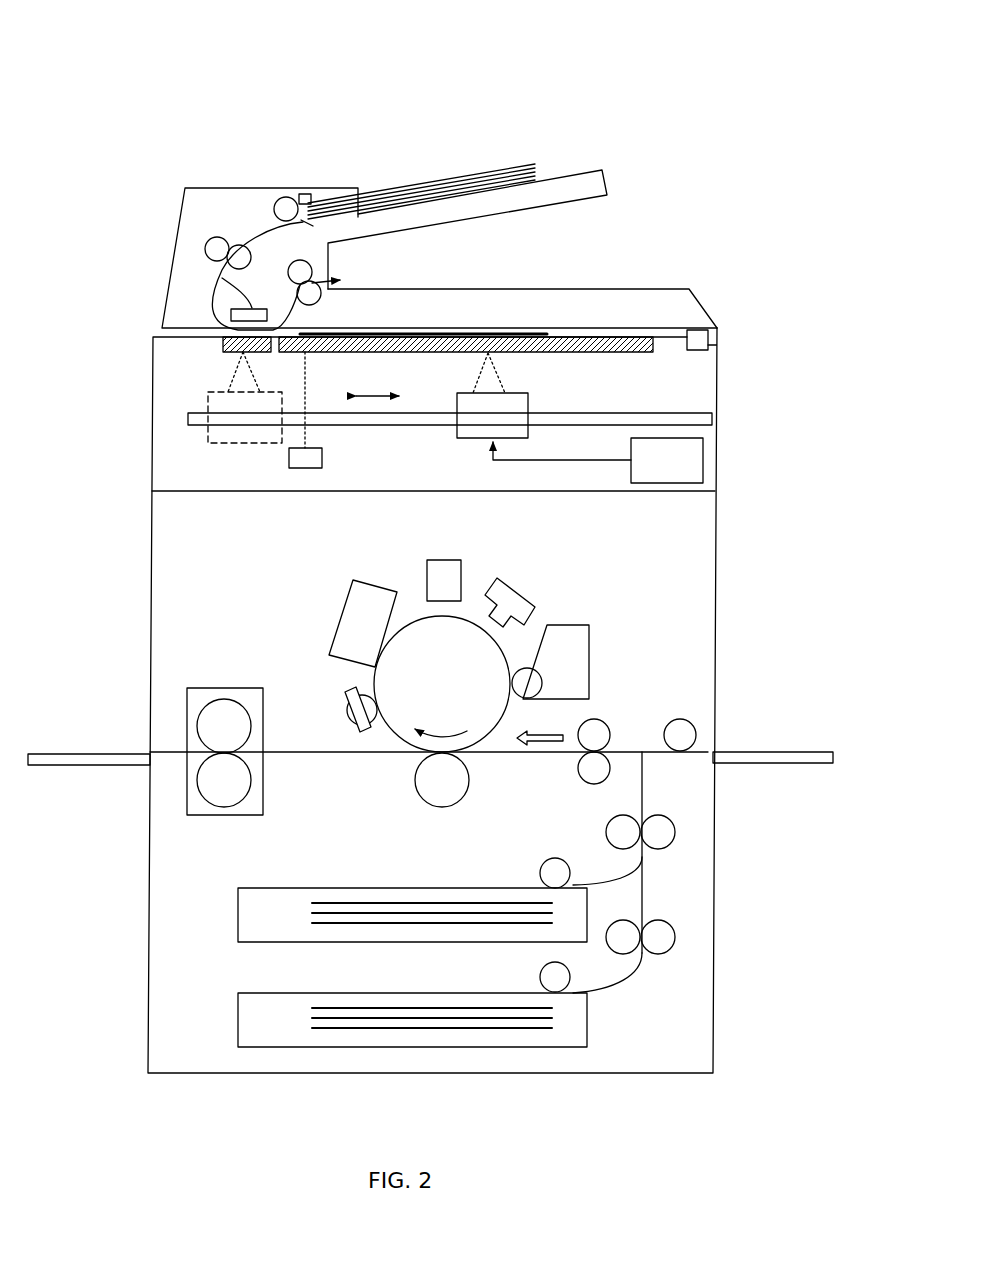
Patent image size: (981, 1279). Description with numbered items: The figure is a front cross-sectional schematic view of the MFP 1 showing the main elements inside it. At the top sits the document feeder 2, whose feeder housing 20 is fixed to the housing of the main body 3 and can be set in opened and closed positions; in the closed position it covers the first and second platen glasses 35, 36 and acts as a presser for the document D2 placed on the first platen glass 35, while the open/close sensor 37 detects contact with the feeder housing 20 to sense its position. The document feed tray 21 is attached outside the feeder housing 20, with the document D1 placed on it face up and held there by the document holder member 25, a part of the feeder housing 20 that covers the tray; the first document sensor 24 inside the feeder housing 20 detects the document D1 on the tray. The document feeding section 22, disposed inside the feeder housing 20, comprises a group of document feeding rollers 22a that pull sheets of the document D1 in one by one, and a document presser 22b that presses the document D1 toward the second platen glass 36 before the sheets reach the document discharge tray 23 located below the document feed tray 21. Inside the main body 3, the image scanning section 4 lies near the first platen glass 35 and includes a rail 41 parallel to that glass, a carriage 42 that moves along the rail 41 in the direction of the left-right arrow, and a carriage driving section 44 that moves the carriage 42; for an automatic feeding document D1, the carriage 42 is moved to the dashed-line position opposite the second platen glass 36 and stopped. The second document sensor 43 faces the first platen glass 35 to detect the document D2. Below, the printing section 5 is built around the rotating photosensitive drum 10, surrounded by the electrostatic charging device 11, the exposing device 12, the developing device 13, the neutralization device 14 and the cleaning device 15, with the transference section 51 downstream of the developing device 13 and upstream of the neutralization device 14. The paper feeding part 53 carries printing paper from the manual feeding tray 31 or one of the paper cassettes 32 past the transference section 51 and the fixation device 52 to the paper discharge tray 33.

The MFP 1 is at (156, 72).
The document feeder 2 is at (694, 136).
The main body 3 is at (786, 513).
The image scanning section 4 is at (146, 419).
The printing section 5 is at (603, 583).
The photosensitive drum 10 is at (442, 684).
The electrostatic charging device 11 is at (440, 560).
The exposing device 12 is at (518, 600).
The developing device 13 is at (589, 660).
The neutralization device 14 is at (345, 712).
The cleaning device 15 is at (350, 610).
The feeder housing 20 is at (240, 188).
The document feed tray 21 is at (600, 172).
The document feeding section 22 is at (147, 196).
The document feeding rollers 22a is at (194, 232).
The document presser 22b is at (252, 308).
The document discharge tray 23 is at (598, 289).
The first document sensor 24 is at (311, 196).
The document holder member 25 is at (356, 188).
The manual feeding tray 31 is at (795, 752).
The paper cassettes 32 is at (236, 912).
The paper discharge tray 33 is at (78, 755).
The first platen glass 35 is at (653, 353).
The second platen glass 36 is at (223, 350).
The open/close sensor 37 is at (708, 345).
The rail 41 is at (588, 413).
The carriage 42 is at (517, 393).
The second document sensor 43 is at (322, 458).
The carriage driving section 44 is at (703, 462).
The transference section 51 is at (417, 797).
The fixation device 52 is at (228, 688).
The paper feeding part 53 is at (506, 818).
The document to be fed D1 is at (536, 165).
The document on the main body D2 is at (508, 333).